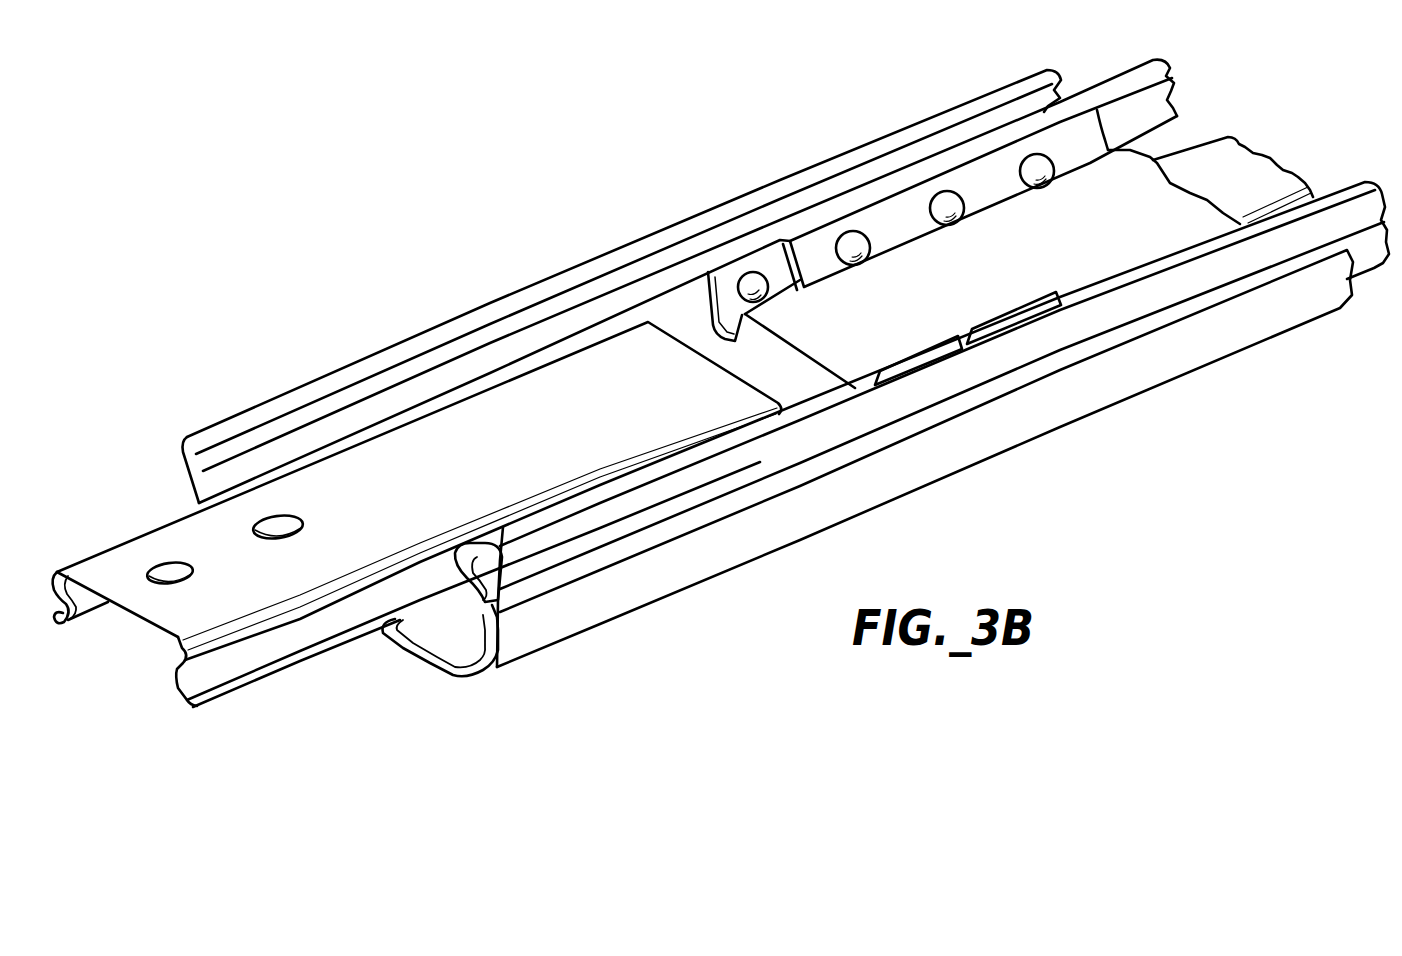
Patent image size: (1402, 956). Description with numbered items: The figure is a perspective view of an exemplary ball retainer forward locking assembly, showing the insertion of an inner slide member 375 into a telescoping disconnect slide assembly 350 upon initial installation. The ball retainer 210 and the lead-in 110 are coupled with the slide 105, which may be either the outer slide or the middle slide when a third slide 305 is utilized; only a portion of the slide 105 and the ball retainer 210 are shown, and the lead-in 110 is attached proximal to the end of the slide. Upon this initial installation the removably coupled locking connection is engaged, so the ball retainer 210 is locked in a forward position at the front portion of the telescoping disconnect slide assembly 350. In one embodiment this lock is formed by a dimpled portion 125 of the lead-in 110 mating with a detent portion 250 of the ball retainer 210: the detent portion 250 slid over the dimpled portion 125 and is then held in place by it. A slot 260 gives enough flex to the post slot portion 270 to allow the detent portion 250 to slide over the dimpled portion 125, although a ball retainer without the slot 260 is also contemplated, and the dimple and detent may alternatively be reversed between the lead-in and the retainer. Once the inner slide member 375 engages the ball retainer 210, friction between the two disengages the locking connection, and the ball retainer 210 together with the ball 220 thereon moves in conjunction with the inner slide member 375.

The slide 105 is at (787, 440).
The lead-in 110 is at (615, 325).
The dimpled portion 125 is at (768, 270).
The ball retainer 210 is at (758, 265).
The ball 220 is at (937, 190).
The detent portion 250 is at (708, 272).
The slot 260 is at (707, 250).
The post slot portion 270 is at (650, 238).
The third slide 305 is at (535, 630).
The telescoping disconnect slide assembly 350 is at (678, 286).
The inner slide member 375 is at (481, 473).